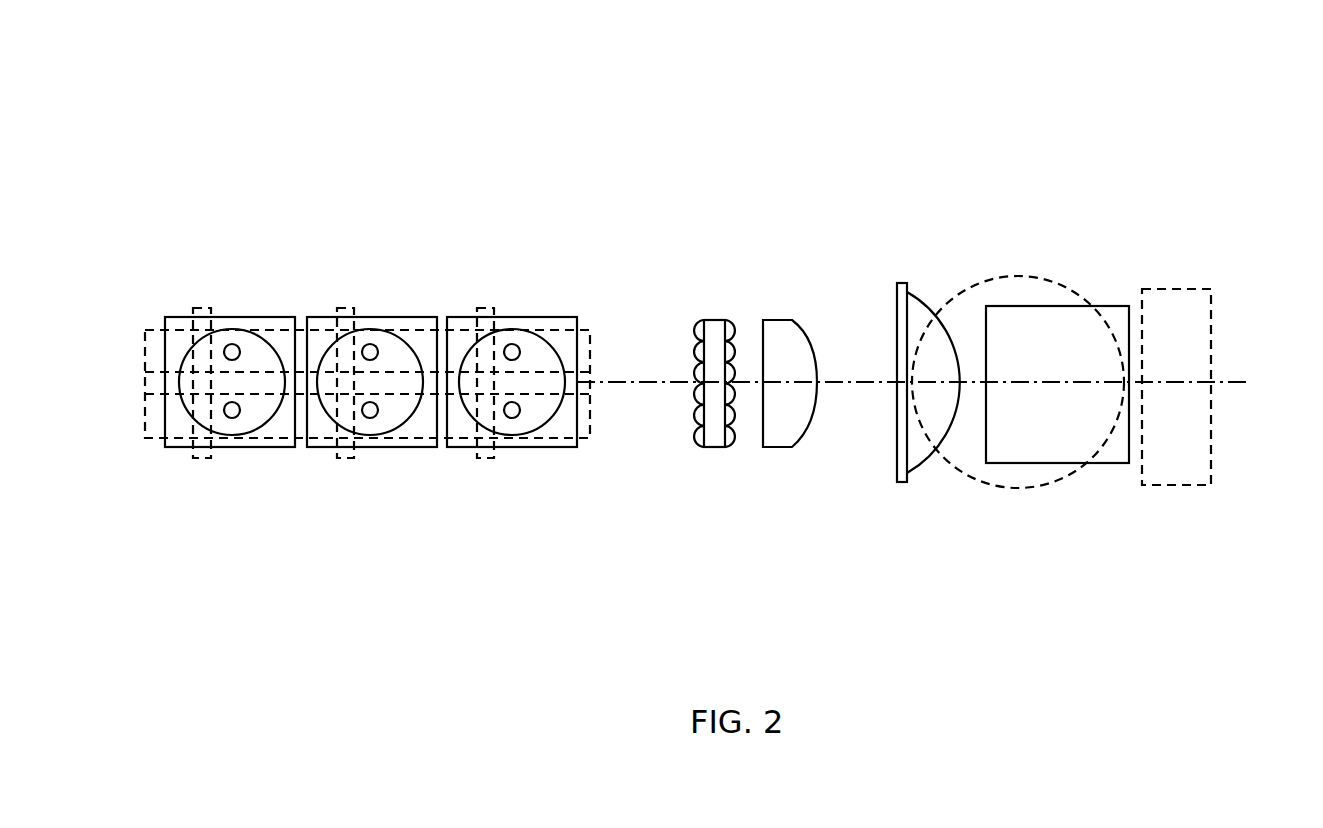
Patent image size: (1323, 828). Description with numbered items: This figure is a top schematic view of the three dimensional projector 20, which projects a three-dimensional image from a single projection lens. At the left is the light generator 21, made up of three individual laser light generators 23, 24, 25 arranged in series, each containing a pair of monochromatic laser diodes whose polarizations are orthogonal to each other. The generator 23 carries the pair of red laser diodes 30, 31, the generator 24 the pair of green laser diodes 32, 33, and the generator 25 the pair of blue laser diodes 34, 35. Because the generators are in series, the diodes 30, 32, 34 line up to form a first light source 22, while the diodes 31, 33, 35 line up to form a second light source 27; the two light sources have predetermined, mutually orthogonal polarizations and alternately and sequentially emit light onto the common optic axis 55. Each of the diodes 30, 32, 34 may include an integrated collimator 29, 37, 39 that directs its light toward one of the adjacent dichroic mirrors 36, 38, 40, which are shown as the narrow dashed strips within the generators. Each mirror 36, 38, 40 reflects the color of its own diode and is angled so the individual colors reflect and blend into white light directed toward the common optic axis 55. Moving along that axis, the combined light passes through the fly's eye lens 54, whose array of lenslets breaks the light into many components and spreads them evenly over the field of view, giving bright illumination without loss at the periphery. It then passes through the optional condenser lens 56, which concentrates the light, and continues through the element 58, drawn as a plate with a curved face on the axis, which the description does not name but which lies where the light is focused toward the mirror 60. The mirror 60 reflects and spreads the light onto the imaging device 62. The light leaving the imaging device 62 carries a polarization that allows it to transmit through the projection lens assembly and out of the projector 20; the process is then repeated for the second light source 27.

The three dimensional projector 20 is at (366, 110).
The light generator 21 is at (139, 499).
The first light source 22 is at (145, 425).
The laser light generator 23 is at (175, 317).
The laser light generator 24 is at (318, 317).
The laser light generator 25 is at (447, 317).
The second light source 27 is at (145, 357).
The integrated collimator 29 is at (270, 430).
The laser diode 30 is at (237, 418).
The laser diode 31 is at (240, 349).
The laser diode 32 is at (372, 418).
The laser diode 33 is at (372, 344).
The laser diode 34 is at (518, 417).
The laser diode 35 is at (518, 347).
The dichroic mirror 36 is at (200, 458).
The integrated collimator 37 is at (415, 435).
The dichroic mirror 38 is at (345, 458).
The integrated collimator 39 is at (570, 432).
The dichroic mirror 40 is at (485, 462).
The fly's eye lens 54 is at (713, 320).
The common optic axis 55 is at (1237, 383).
The condenser lens 56 is at (777, 320).
The window plate with hemispherical lens 58 is at (897, 305).
The mirror 60 is at (963, 473).
The imaging device 62 is at (1107, 463).